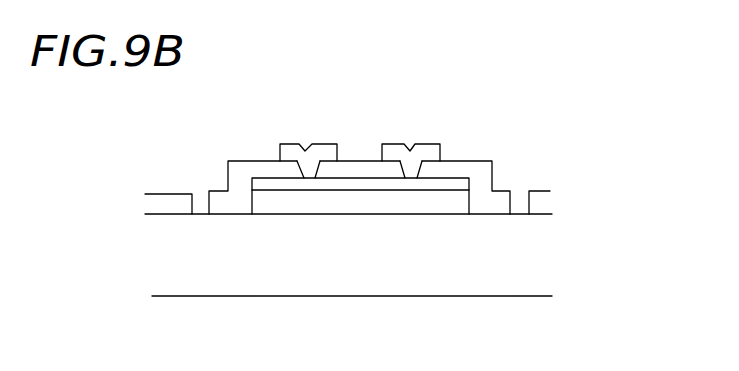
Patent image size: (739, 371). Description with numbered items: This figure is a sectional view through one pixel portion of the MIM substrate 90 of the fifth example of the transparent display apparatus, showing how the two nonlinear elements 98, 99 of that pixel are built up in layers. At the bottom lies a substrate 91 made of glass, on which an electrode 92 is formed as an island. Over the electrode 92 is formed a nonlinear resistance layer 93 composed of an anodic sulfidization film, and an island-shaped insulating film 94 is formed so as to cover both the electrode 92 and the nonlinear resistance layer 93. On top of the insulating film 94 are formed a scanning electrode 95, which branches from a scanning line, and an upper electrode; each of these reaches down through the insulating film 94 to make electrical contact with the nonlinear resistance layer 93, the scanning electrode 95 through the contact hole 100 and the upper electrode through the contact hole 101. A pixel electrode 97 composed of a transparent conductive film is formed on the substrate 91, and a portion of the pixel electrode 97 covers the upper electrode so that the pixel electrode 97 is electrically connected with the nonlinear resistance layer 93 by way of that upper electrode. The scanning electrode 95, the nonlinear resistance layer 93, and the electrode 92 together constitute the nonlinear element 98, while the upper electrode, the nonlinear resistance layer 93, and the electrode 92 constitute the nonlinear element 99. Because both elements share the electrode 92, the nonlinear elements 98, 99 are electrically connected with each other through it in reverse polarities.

The MIM substrate 90 is at (556, 136).
The substrate 91 is at (472, 272).
The electrode 92 is at (359, 202).
The nonlinear resistance layer 93 is at (262, 178).
The insulating film 94 is at (232, 178).
The scanning electrode 95 is at (297, 141).
The pixel electrode 97 is at (536, 194).
The nonlinear element 98 is at (322, 105).
The nonlinear element 99 is at (403, 96).
The contact hole 100 is at (305, 162).
The contact hole 101 is at (410, 162).